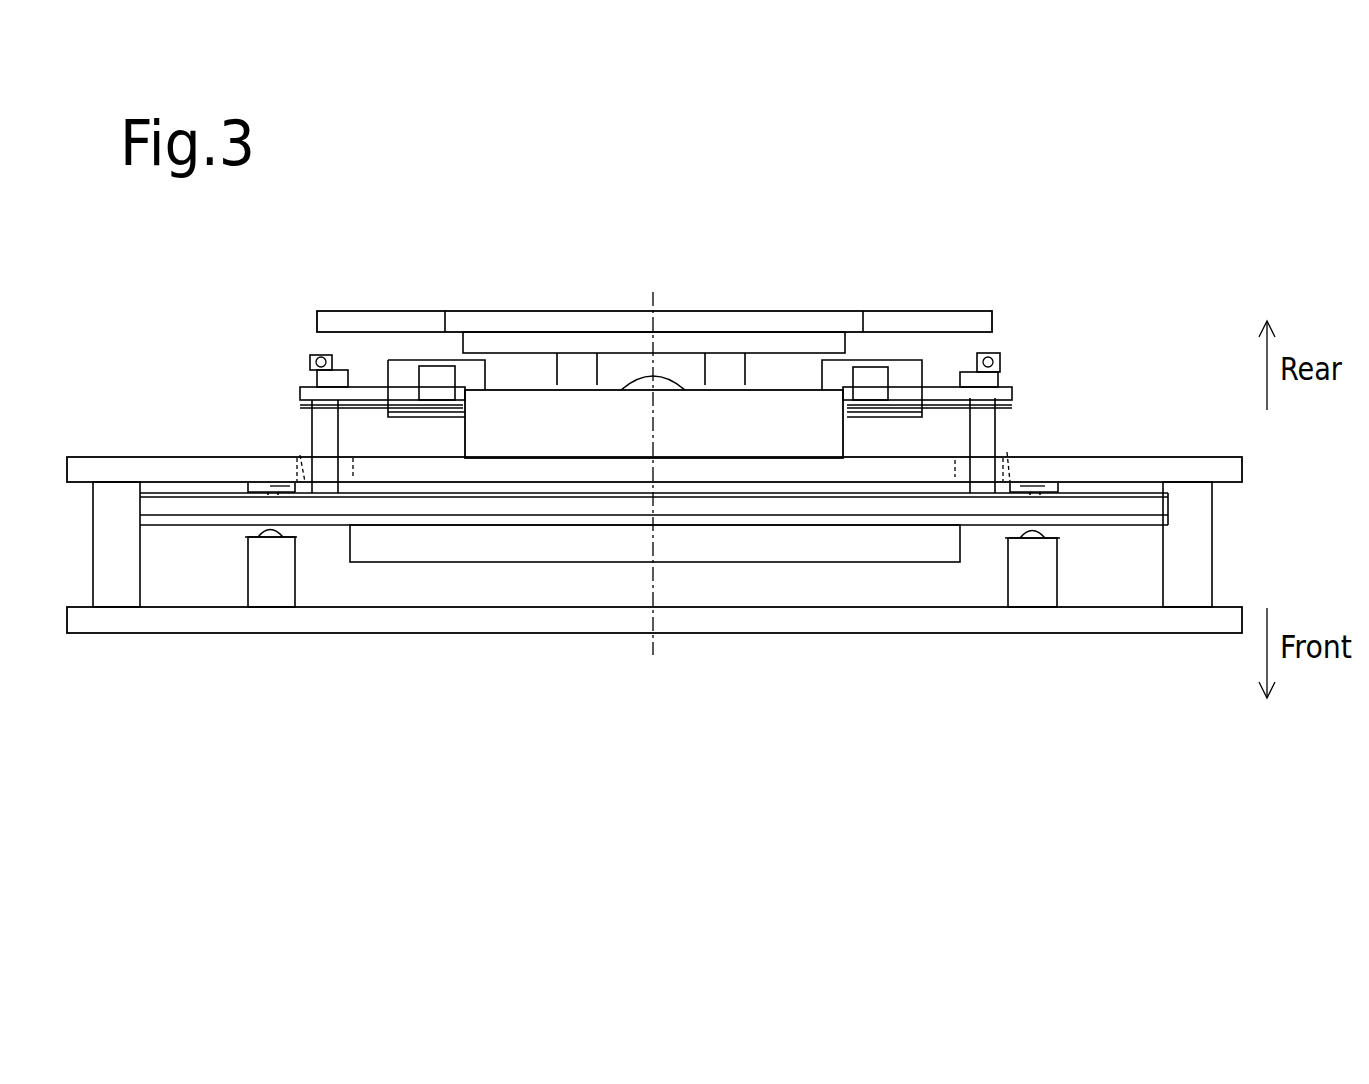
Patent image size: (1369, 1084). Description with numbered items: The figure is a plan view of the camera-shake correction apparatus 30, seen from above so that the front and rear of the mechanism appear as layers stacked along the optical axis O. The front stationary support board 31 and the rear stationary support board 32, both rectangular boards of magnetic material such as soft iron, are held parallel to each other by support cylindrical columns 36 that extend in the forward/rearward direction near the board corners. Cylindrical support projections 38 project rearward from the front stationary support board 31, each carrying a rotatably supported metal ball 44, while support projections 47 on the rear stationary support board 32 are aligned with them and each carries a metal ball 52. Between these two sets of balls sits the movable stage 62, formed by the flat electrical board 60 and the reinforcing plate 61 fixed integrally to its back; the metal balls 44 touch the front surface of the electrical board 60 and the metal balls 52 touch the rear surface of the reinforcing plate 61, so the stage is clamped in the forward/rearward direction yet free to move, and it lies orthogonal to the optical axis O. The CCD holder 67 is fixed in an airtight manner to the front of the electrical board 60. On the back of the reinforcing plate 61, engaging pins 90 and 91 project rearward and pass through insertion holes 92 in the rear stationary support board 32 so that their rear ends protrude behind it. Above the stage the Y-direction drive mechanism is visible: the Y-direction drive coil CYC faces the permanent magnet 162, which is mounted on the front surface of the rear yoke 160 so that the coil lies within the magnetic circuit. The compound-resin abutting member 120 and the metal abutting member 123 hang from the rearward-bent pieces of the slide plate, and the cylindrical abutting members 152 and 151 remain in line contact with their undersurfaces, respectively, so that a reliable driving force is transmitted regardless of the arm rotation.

The camera-shake correction apparatus 30 is at (102, 398).
The front stationary support board 31 is at (682, 630).
The rear stationary support board 32 is at (1162, 468).
The support cylindrical column 36 is at (125, 593).
The cylindrical support projection 38 is at (273, 597).
The metal ball 44 is at (293, 535).
The support projection 47 is at (287, 480).
The metal ball 52 is at (250, 493).
The electrical board 60 is at (540, 527).
The reinforcing plate 61 is at (600, 507).
The movable stage 62 is at (654, 644).
The CCD holder 67 is at (482, 562).
The engaging pin 90 is at (990, 428).
The engaging pin 91 is at (322, 435).
The insertion hole 92 is at (305, 467).
The abutting member 120 is at (475, 370).
The abutting member 123 is at (903, 370).
The cylindrical abutting member 151 is at (868, 370).
The cylindrical abutting member 152 is at (433, 372).
The rear yoke 160 is at (535, 320).
The permanent magnet 162 is at (587, 343).
The Y-direction drive coil CYC is at (748, 413).
The optical axis O is at (660, 306).